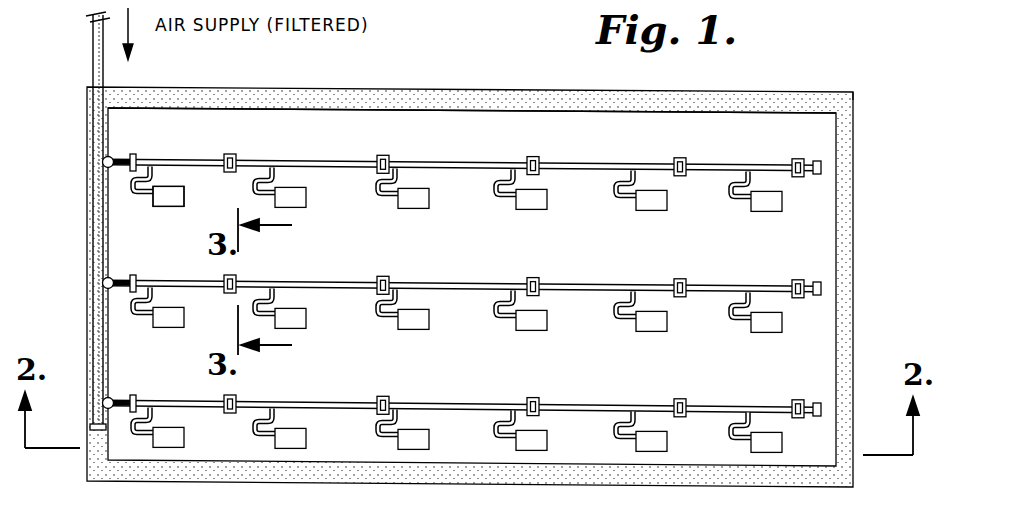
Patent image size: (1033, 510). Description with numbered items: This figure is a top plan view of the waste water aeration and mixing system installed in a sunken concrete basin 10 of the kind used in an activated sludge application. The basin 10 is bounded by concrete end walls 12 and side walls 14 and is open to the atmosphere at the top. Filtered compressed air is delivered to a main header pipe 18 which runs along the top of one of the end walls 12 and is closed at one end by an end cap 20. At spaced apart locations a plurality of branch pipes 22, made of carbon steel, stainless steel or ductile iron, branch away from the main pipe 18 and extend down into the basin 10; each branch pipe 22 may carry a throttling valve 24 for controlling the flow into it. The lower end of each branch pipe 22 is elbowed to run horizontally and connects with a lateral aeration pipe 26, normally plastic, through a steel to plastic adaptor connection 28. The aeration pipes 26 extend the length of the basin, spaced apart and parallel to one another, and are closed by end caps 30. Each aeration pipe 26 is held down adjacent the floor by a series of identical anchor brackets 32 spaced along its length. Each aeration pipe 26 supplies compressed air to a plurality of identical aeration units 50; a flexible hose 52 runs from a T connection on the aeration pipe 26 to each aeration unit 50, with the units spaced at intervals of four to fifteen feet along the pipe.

The basin 10 is at (828, 94).
The end walls 12 is at (842, 244).
The side walls 14 is at (500, 90).
The main header pipe 18 is at (93, 45).
The end cap 20 is at (92, 428).
The branch pipes 22 is at (112, 157).
The throttling valve 24 is at (102, 162).
The aeration pipe 26 is at (346, 158).
The steel to plastic adaptor connections 28 is at (136, 156).
The end caps 30 is at (820, 160).
The anchor brackets 32 is at (514, 273).
The aeration units 50 is at (480, 333).
The flexible hose 52 is at (453, 315).